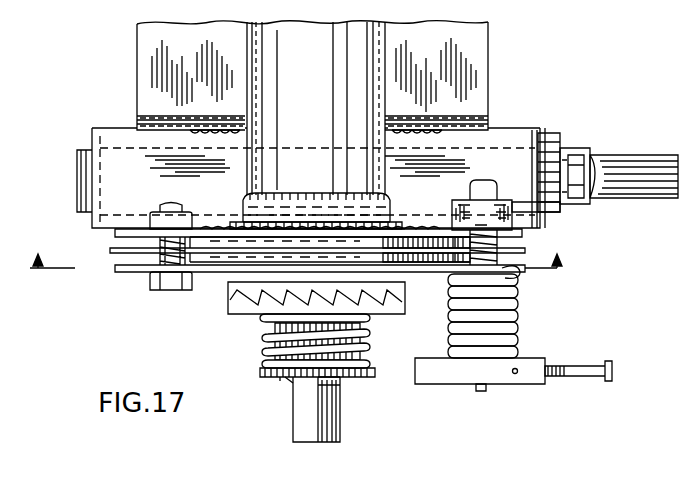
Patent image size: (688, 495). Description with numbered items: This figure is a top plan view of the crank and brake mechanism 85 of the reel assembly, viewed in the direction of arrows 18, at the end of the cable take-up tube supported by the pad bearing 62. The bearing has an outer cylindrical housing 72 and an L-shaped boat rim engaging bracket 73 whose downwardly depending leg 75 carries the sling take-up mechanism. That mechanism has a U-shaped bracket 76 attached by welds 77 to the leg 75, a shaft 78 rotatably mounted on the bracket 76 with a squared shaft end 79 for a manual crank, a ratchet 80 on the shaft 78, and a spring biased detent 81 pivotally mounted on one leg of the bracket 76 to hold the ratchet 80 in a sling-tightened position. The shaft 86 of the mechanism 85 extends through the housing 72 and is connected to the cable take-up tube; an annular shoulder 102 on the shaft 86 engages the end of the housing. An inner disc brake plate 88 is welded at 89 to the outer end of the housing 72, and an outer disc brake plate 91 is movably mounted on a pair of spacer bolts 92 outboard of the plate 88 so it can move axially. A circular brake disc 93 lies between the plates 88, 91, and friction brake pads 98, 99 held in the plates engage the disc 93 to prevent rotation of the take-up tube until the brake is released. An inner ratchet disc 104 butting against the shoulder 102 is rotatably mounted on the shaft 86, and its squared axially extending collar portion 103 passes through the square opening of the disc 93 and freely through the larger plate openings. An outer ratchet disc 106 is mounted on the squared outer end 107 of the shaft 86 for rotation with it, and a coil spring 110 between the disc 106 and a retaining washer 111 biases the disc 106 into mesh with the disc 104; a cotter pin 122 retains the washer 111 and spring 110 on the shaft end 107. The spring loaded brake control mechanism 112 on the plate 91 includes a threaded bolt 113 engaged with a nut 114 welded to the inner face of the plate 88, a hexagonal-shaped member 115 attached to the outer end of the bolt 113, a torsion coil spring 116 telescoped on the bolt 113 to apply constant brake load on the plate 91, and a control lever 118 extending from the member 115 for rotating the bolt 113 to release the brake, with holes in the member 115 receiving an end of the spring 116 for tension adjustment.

The section line 18- 18 is at (299, 276).
The pad bearing 62 is at (245, 44).
The outer cylindrical housing 72 is at (388, 46).
The L-shaped boat rim engaging bracket 73 is at (160, 73).
The downwardly depending leg 75 is at (472, 118).
The U-shaped bracket 76 is at (318, 178).
The welds 77 is at (212, 128).
The shaft 78 is at (85, 166).
The squared shaft end 79 is at (654, 156).
The ratchet 80 is at (548, 146).
The spring biased detent 81 is at (574, 160).
The mechanism 85 is at (158, 348).
The shaft 86 is at (372, 60).
The inner disc brake plate 88 is at (125, 236).
The weld 89 is at (408, 228).
The outer disc brake plate 91 is at (118, 268).
The spacer bolts 92 is at (160, 250).
The brake disc 93 is at (208, 245).
The friction brake pad 98 is at (428, 250).
The friction brake pad 99 is at (418, 262).
The annular shoulder 102 is at (305, 192).
The squared axially extending collar portion 103 is at (340, 245).
The inner ratchet disc 104 is at (238, 292).
The outer ratchet disc 106 is at (264, 318).
The squared outer end 107 is at (308, 426).
The coil spring 110 is at (370, 340).
The retaining washer 111 is at (356, 378).
The brake control mechanism 112 is at (502, 386).
The threaded bolt 113 is at (486, 190).
The nut 114 is at (503, 213).
The hexagonal-shaped member 115 is at (528, 374).
The torsion coil spring 116 is at (520, 338).
The control lever 118 is at (585, 372).
The cotter pin 122 is at (288, 380).